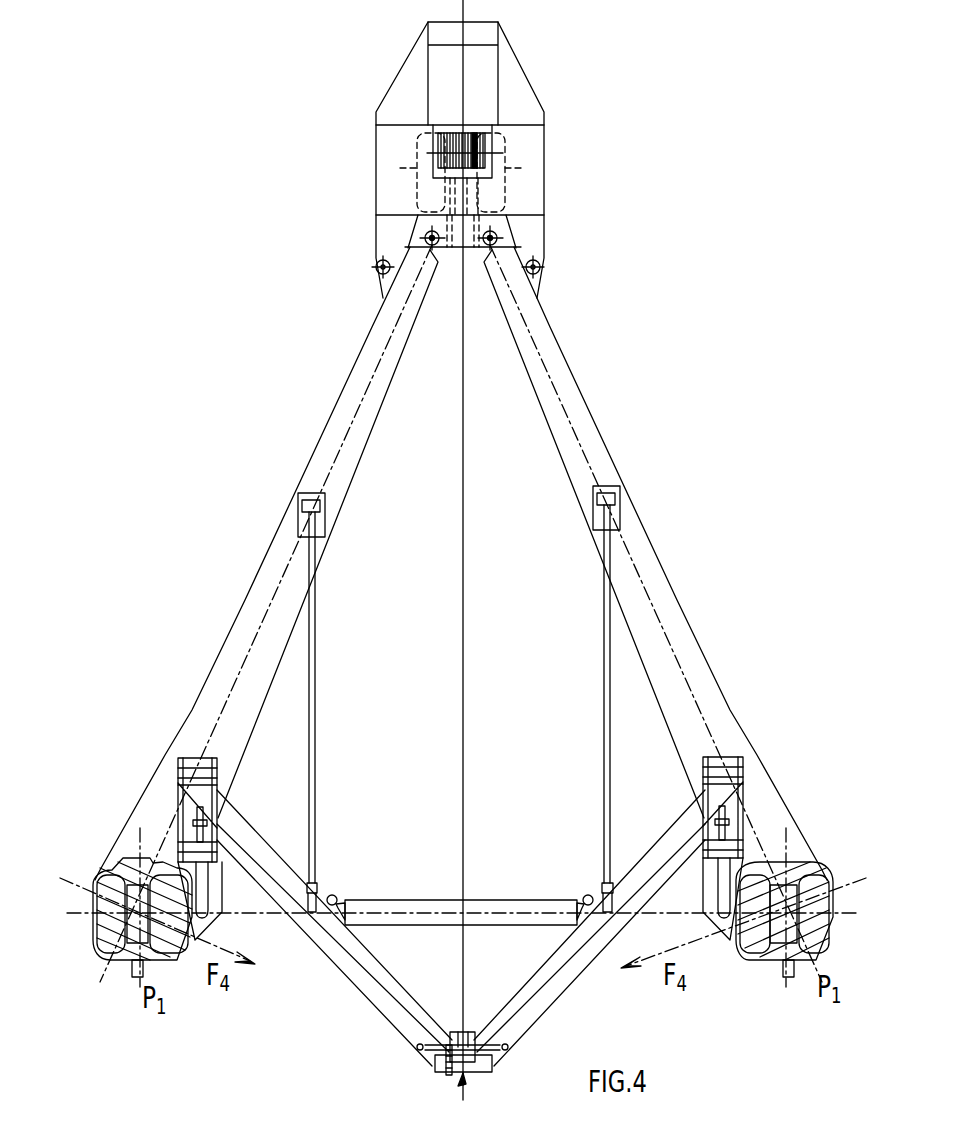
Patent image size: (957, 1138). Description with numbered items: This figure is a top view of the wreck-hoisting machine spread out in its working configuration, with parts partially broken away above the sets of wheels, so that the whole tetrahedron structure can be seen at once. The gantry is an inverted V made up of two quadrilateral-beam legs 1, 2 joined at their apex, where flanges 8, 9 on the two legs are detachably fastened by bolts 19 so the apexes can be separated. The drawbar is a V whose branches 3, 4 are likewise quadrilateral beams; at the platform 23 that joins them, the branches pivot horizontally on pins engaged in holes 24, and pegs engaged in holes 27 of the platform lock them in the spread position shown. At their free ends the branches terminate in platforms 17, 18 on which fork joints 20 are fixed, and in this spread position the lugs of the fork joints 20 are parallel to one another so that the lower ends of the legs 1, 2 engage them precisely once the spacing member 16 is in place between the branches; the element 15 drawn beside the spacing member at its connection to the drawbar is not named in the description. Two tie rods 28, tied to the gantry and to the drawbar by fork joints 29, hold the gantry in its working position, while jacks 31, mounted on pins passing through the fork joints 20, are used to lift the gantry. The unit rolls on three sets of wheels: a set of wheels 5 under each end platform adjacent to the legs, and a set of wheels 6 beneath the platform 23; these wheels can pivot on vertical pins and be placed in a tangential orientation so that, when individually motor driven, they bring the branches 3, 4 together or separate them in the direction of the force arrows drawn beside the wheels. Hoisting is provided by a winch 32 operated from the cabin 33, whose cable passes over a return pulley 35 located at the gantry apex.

The leg 1 is at (333, 957).
The leg 2 is at (580, 957).
The branch 3 is at (348, 405).
The branch 4 is at (578, 405).
The set of wheels 5 is at (85, 880).
The set of wheels 6 is at (425, 188).
The flange 8 is at (447, 1068).
The flange 9 is at (460, 1084).
The joint 15 is at (588, 896).
The spacing member 16 is at (516, 900).
The platform 17 is at (162, 960).
The platform 18 is at (752, 962).
The bolt 19 is at (435, 1060).
The fork joint 20 is at (178, 760).
The platform 23 is at (530, 200).
The hole 24 is at (428, 238).
The hole 27 is at (376, 267).
The tie rod 28 is at (315, 720).
The fork joint 29 is at (306, 515).
The jack 31 is at (213, 890).
The winch 32 is at (445, 150).
The cabin 33 is at (440, 88).
The return pulley 35 is at (475, 1032).